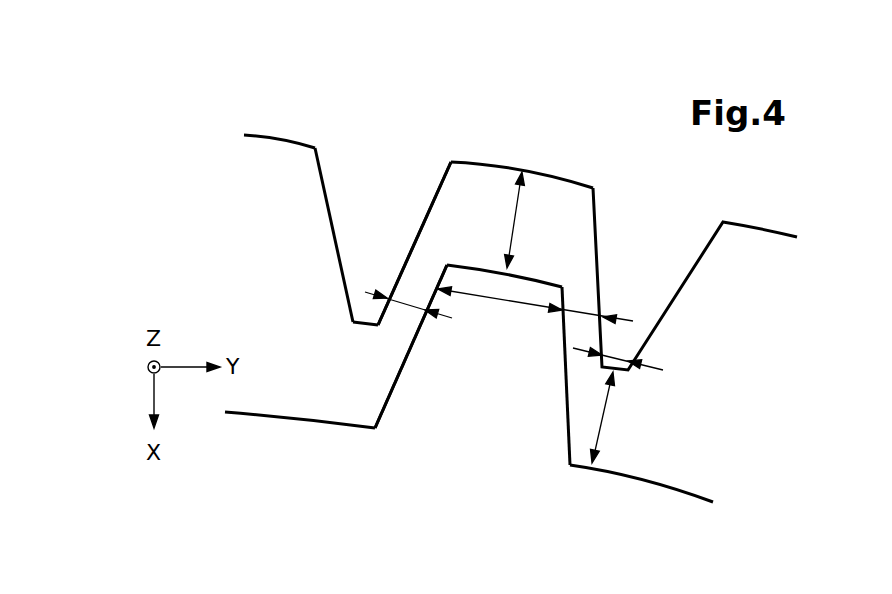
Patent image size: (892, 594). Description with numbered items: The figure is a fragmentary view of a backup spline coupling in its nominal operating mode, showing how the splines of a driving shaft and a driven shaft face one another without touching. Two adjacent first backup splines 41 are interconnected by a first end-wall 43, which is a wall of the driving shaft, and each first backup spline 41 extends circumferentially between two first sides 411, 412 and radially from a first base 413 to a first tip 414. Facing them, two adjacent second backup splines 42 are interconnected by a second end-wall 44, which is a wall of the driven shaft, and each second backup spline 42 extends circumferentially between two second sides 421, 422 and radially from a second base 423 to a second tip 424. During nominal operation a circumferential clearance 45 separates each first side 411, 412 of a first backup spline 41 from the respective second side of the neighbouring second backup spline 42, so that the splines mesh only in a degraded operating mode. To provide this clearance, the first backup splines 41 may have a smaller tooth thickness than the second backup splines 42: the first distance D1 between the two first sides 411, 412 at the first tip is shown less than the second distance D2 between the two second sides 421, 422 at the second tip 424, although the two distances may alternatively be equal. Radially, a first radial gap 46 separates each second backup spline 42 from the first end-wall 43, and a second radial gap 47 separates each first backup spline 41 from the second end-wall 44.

The first backup spline 41 is at (512, 210).
The first side 411 is at (322, 180).
The first side 412 is at (438, 188).
The first base 413 is at (388, 170).
The first tip 414 is at (363, 319).
The second backup spline 42 is at (469, 382).
The second side 421 is at (412, 348).
The second side 422 is at (570, 424).
The second base 423 is at (488, 450).
The second tip 424 is at (493, 281).
The first end-wall 43 is at (492, 163).
The second end-wall 44 is at (683, 492).
The circumferential clearance 45 is at (408, 308).
The first radial gap 46 is at (525, 211).
The second radial gap 47 is at (608, 412).
The first distance D1 is at (627, 352).
The second distance D2 is at (518, 302).